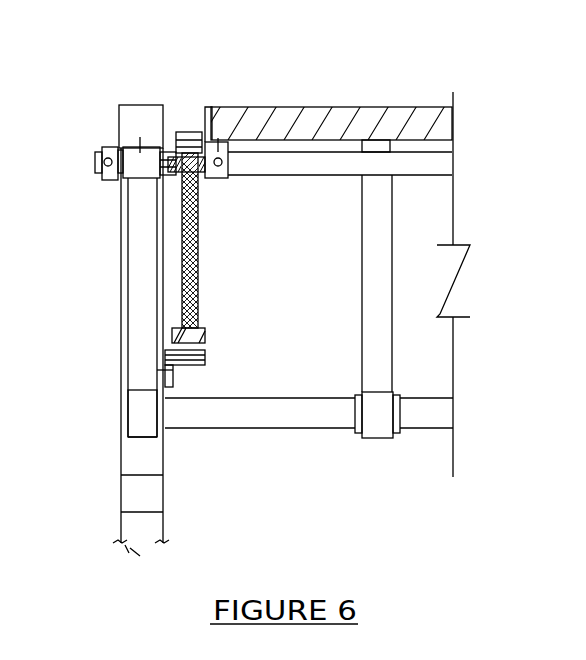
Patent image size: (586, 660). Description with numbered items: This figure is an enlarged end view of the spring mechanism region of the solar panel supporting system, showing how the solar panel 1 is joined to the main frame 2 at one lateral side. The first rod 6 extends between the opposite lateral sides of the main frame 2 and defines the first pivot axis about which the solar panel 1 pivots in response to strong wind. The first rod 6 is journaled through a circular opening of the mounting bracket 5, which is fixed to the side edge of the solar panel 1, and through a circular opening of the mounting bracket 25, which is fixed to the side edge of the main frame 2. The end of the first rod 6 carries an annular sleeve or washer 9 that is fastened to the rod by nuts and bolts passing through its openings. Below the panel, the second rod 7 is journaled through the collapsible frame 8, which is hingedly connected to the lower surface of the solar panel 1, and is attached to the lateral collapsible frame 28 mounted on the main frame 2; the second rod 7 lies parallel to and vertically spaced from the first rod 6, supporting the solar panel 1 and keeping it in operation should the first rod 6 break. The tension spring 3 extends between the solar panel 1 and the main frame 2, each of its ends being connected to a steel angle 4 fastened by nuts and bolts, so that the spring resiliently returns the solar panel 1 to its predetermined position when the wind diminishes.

The solar panel 1 is at (325, 120).
The main frame 2 is at (142, 118).
The tension spring 3 is at (200, 262).
The steel angle 4 is at (180, 118).
The mounting bracket 5 is at (230, 177).
The first rod 6 is at (432, 165).
The second rod 7 is at (430, 410).
The collapsible frame 8 is at (375, 417).
The annular sleeve or washer 9 is at (106, 147).
The mounting bracket 25 is at (140, 170).
The lateral collapsible frame 28 is at (137, 415).